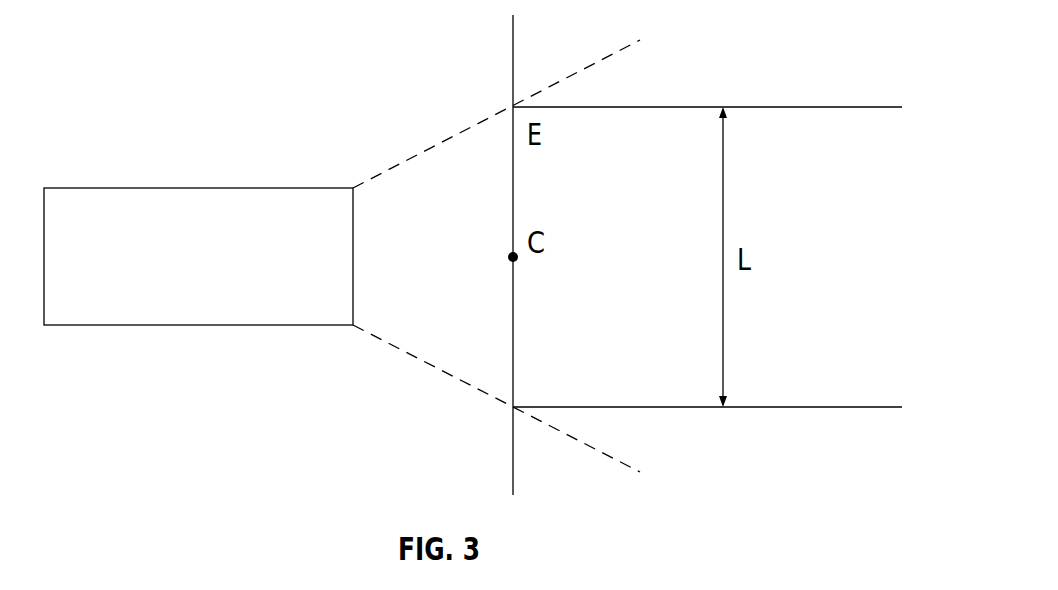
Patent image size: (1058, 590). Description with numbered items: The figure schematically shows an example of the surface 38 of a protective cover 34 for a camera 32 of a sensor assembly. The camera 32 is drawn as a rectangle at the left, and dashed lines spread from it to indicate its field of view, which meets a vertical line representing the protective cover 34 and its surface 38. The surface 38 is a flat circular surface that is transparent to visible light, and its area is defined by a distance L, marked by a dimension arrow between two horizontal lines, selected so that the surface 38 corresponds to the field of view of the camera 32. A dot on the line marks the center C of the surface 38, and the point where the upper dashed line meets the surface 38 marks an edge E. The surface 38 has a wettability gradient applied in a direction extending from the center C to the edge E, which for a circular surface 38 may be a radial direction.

The camera 32 is at (100, 187).
The protective cover 34 is at (513, 48).
The surface 38 is at (513, 352).